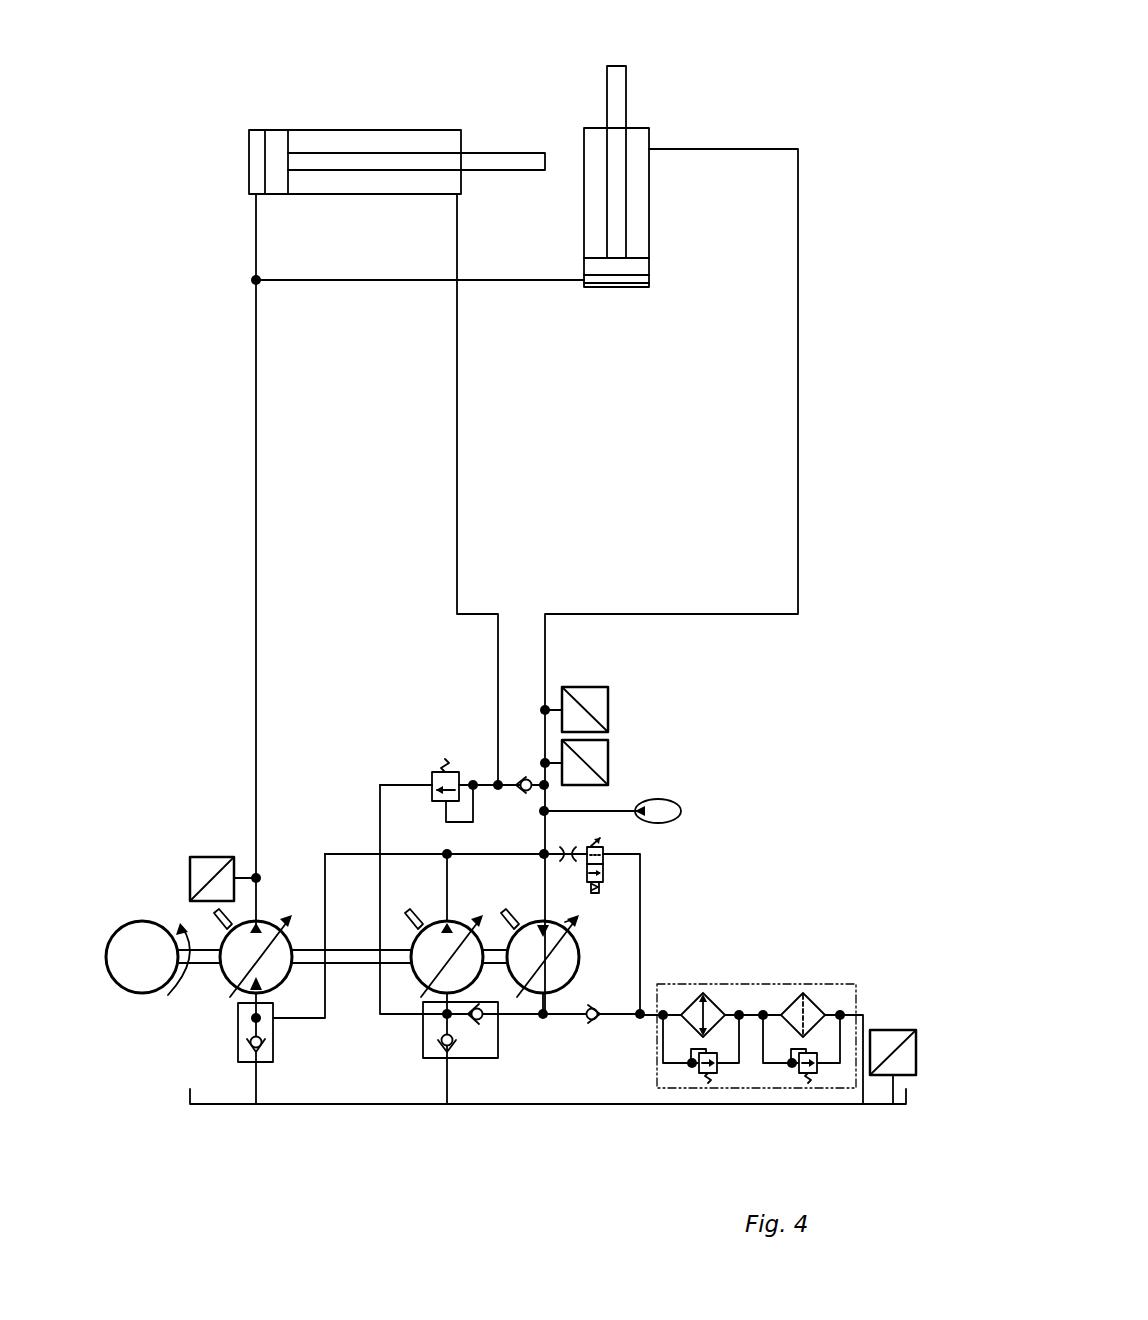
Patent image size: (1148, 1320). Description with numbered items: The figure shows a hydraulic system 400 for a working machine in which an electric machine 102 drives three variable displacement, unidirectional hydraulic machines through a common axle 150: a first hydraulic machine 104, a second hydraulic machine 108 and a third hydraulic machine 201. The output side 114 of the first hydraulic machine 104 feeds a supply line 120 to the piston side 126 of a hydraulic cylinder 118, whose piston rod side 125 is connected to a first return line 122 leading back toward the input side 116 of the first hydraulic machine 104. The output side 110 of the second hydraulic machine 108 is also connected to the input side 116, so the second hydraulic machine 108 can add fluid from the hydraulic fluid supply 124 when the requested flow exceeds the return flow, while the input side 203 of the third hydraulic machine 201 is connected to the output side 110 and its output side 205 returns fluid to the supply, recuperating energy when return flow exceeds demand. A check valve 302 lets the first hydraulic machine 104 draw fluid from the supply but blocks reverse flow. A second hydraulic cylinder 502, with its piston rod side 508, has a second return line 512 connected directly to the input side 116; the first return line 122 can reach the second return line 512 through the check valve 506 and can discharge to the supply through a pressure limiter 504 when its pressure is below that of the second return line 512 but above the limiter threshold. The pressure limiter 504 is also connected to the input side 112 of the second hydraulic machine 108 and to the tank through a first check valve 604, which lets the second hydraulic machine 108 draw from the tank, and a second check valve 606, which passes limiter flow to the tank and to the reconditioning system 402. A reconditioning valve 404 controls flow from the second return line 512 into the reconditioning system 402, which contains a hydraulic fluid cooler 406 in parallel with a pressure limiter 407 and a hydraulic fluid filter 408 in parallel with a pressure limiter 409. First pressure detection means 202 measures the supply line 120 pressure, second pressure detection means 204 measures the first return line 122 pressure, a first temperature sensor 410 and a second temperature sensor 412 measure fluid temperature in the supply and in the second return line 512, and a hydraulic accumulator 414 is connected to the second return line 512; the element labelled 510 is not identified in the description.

The hydraulic system 400 is at (830, 63).
The electric machine 102 is at (118, 927).
The first hydraulic machine 104 is at (230, 980).
The second hydraulic machine 108 is at (483, 1022).
The output side of the second hydraulic machine 110 is at (428, 922).
The input side of the second hydraulic machine 112 is at (538, 997).
The output side of the first hydraulic machine 114 is at (258, 921).
The input side of the first hydraulic machine 116 is at (263, 993).
The hydraulic cylinder 118 is at (358, 130).
The supply line 120 is at (256, 480).
The first return line 122 is at (457, 483).
The hydraulic fluid supply 124 is at (338, 1105).
The piston rod side 125 is at (462, 182).
The piston side 126 is at (249, 158).
The common axle 150 is at (365, 950).
The third hydraulic machine 201 is at (617, 958).
The first pressure detection means 202 is at (212, 856).
The input side of the third hydraulic machine 203 is at (565, 922).
The second pressure detection means 204 is at (597, 687).
The output side of the third hydraulic machine 205 is at (548, 993).
The check valve 302 is at (253, 1053).
The reconditioning system 402 is at (782, 983).
The reconditioning valve 404 is at (607, 848).
The hydraulic fluid cooler 406 is at (705, 993).
The pressure limiter 407 is at (695, 1067).
The hydraulic fluid filter 408 is at (807, 993).
The pressure limiter 409 is at (818, 1067).
The first temperature sensor 410 is at (888, 1030).
The second temperature sensor 412 is at (613, 762).
The hydraulic accumulator 414 is at (668, 798).
The second hydraulic cylinder 502 is at (648, 128).
The pressure limiter 504 is at (430, 776).
The check valve 506 is at (521, 792).
The piston rod side 508 is at (650, 152).
The cylinder port 510 is at (584, 288).
The second return line 512 is at (647, 614).
The first check valve 604 is at (457, 1040).
The second check valve 606 is at (497, 1020).